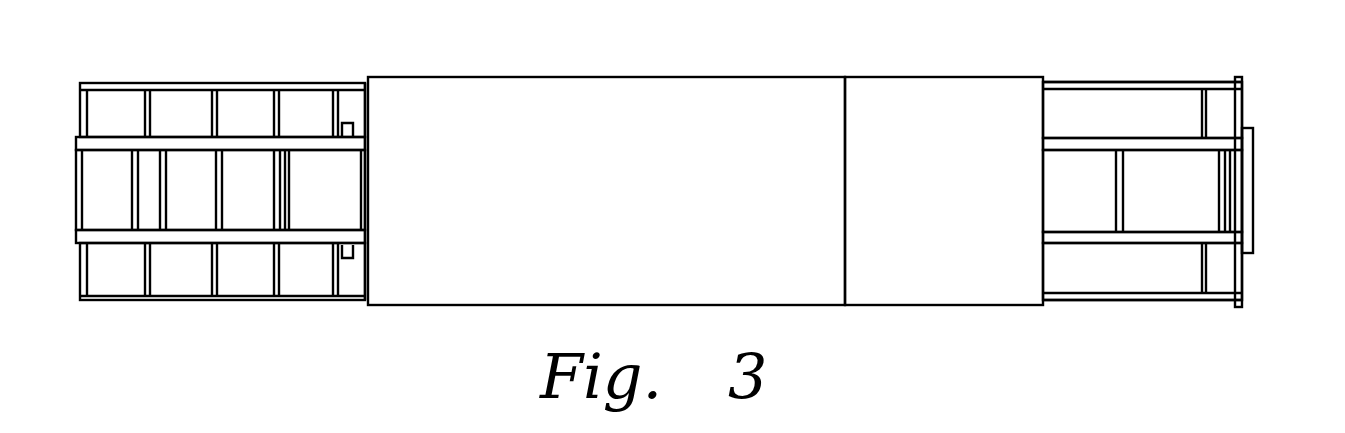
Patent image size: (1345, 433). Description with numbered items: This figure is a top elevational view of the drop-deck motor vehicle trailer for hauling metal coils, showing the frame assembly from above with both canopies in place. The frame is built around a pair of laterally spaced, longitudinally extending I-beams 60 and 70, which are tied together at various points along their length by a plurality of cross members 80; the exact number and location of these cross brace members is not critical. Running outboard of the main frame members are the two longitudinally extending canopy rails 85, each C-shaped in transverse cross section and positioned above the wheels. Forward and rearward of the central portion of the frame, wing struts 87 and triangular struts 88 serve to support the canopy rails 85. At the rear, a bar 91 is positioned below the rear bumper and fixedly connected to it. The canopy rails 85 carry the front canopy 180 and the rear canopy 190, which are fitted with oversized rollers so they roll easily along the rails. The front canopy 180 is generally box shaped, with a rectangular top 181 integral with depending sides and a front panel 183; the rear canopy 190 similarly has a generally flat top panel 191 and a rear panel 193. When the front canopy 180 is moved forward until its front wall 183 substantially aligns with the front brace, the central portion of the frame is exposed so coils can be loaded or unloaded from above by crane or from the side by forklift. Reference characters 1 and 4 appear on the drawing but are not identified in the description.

The cargo transport apparatus 1 is at (80, 115).
The frame 4 is at (76, 198).
The I-beam 60 is at (1155, 237).
The I-beam 70 is at (1130, 142).
The cross members 80 is at (167, 198).
The canopy rail 85 is at (178, 87).
The wing struts 87 is at (218, 104).
The triangular struts 88 is at (1242, 107).
The bar 91 is at (1253, 193).
The front canopy 180 is at (580, 77).
The rectangular top 181 is at (612, 195).
The front panel 183 is at (363, 283).
The rear canopy 190 is at (928, 77).
The top panel 191 is at (947, 195).
The rear panel 193 is at (1045, 270).